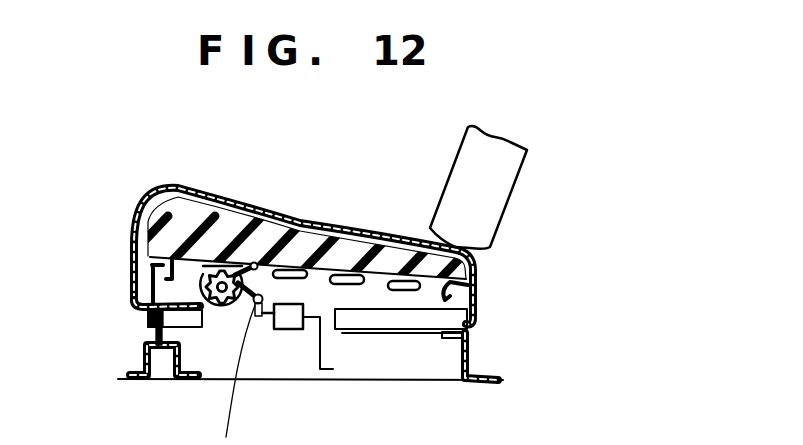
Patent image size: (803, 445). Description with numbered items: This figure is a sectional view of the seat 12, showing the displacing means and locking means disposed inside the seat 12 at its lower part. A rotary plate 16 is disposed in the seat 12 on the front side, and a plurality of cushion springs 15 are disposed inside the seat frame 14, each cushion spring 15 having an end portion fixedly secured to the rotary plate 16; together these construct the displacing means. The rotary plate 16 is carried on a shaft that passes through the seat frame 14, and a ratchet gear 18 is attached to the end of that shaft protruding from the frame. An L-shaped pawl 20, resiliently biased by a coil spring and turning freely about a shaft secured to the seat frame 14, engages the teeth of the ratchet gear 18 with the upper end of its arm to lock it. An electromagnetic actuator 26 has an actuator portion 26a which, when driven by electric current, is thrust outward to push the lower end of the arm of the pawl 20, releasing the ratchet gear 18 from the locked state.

The seat 12 is at (398, 234).
The seat frame 14 is at (133, 271).
The cushion spring 15 is at (303, 300).
The rotary plate 16 is at (199, 257).
The ratchet gear 18 is at (220, 308).
The pawl 20 is at (262, 275).
The electromagnetic actuator 26 is at (301, 330).
The actuator portion 26a is at (262, 318).